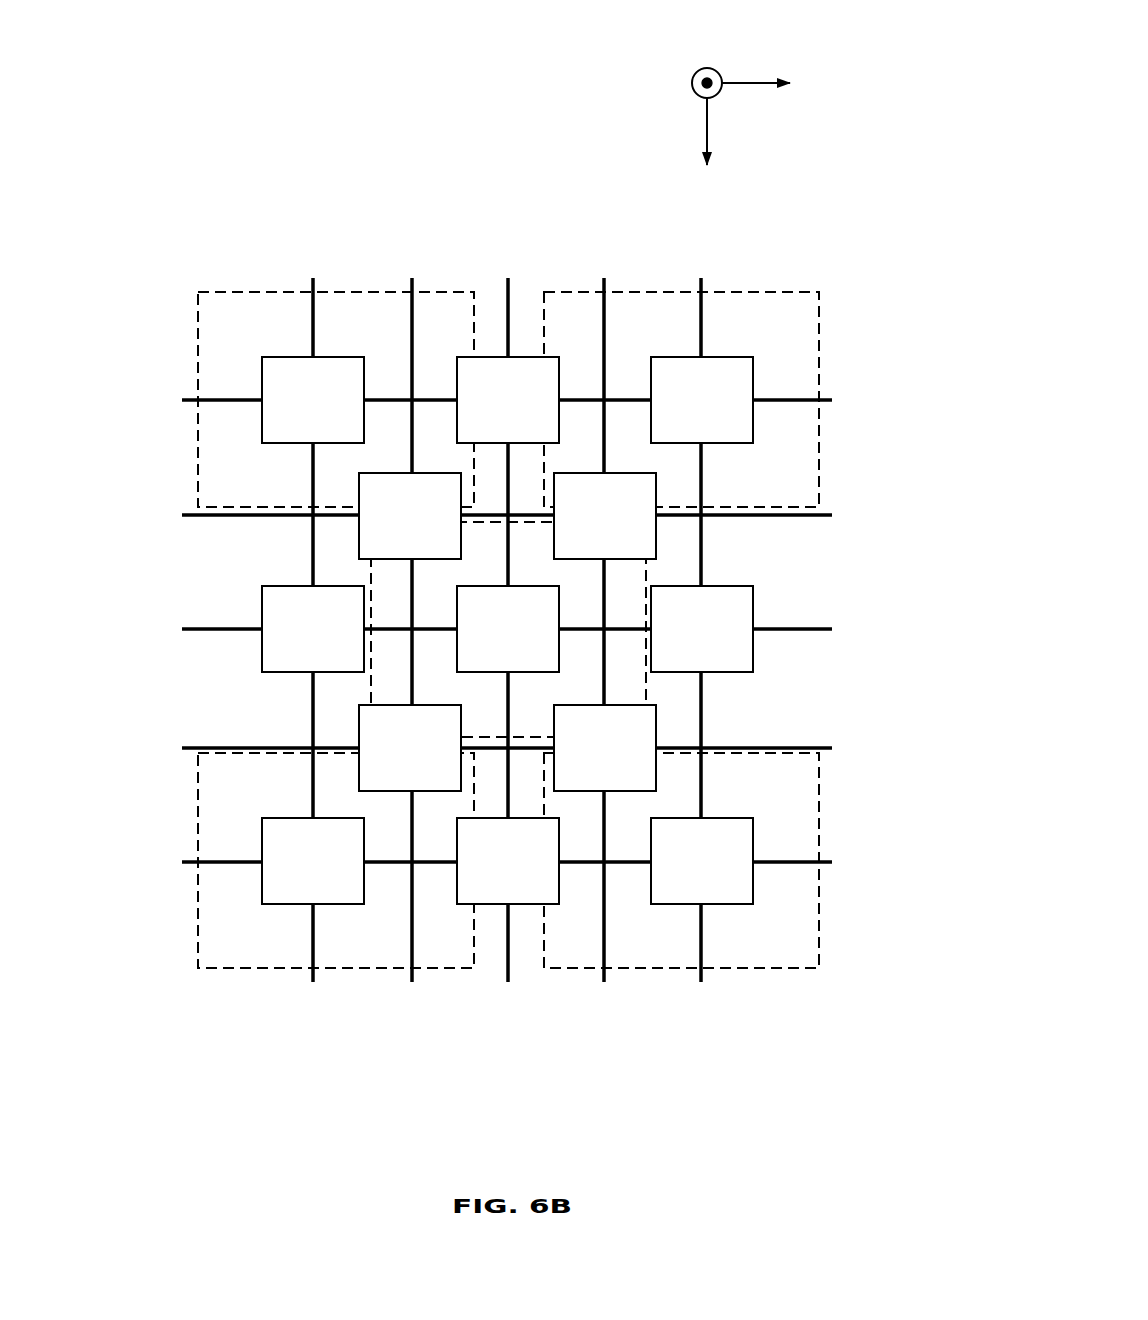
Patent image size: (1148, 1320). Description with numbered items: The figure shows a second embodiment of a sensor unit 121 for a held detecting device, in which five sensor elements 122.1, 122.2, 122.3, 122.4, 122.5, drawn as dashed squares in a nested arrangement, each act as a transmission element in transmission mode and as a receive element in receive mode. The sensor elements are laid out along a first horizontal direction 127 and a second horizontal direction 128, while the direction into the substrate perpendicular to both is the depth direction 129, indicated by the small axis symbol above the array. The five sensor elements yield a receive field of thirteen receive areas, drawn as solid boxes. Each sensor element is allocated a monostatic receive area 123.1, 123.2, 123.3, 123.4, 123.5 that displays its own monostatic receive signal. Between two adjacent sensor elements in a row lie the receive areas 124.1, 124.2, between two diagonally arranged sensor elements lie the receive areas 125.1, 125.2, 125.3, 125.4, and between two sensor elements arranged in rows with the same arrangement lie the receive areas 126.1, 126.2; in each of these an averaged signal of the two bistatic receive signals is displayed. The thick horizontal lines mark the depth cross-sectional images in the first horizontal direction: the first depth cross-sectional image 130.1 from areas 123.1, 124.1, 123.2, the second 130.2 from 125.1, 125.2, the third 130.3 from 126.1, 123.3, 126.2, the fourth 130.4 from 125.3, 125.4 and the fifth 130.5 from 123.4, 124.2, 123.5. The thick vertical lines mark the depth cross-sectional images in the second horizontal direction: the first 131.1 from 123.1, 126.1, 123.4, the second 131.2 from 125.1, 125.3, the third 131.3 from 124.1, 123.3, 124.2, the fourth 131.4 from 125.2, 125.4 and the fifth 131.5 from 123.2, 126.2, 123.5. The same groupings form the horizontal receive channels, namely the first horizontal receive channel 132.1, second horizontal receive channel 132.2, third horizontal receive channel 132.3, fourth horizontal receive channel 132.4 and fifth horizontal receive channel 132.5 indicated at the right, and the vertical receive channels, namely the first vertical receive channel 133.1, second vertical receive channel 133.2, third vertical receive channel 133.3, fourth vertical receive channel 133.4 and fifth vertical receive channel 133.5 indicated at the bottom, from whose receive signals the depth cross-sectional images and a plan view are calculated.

The sensor unit 121 is at (507, 132).
The sensor element 122.1 is at (228, 290).
The sensor element 122.2 is at (796, 290).
The sensor element 122.3 is at (646, 690).
The sensor element 122.4 is at (226, 970).
The sensor element 122.5 is at (800, 970).
The monostatic receive area 123.1 is at (285, 411).
The monostatic receive area 123.2 is at (674, 411).
The monostatic receive area 123.3 is at (480, 640).
The monostatic receive area 123.4 is at (285, 872).
The monostatic receive area 123.5 is at (674, 872).
The receive area 124.1 is at (480, 411).
The receive area 124.2 is at (480, 872).
The receive area 125.1 is at (382, 527).
The receive area 125.2 is at (577, 527).
The receive area 125.3 is at (382, 759).
The receive area 125.4 is at (577, 759).
The receive area 126.1 is at (285, 640).
The receive area 126.2 is at (674, 640).
The first horizontal direction 127 is at (757, 88).
The second horizontal direction 128 is at (707, 127).
The depth direction 129 is at (707, 68).
The first depth cross-sectional image 130.1 is at (433, 400).
The second depth cross-sectional image 130.2 is at (433, 515).
The third depth cross-sectional image 130.3 is at (433, 629).
The fourth depth cross-sectional image 130.4 is at (433, 748).
The fifth depth cross-sectional image 130.5 is at (433, 862).
The first depth cross-sectional image 131.1 is at (312, 575).
The second depth cross-sectional image 131.2 is at (411, 575).
The third depth cross-sectional image 131.3 is at (507, 575).
The fourth depth cross-sectional image 131.4 is at (603, 575).
The fifth depth cross-sectional image 131.5 is at (700, 575).
The first horizontal receive channel 132.1 is at (768, 383).
The second horizontal receive channel 132.2 is at (743, 497).
The third horizontal receive channel 132.3 is at (768, 612).
The fourth horizontal receive channel 132.4 is at (741, 732).
The fifth horizontal receive channel 132.5 is at (768, 845).
The first vertical receive channel 133.1 is at (328, 925).
The second vertical receive channel 133.2 is at (420, 912).
The third vertical receive channel 133.3 is at (519, 925).
The fourth vertical receive channel 133.4 is at (617, 910).
The fifth vertical receive channel 133.5 is at (719, 925).